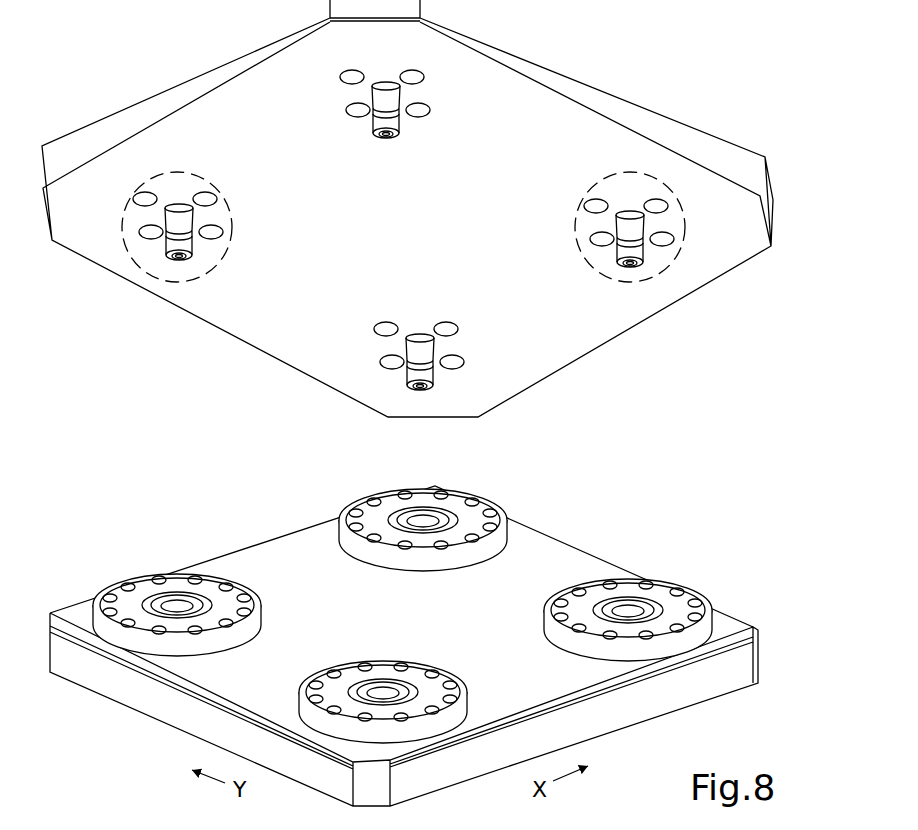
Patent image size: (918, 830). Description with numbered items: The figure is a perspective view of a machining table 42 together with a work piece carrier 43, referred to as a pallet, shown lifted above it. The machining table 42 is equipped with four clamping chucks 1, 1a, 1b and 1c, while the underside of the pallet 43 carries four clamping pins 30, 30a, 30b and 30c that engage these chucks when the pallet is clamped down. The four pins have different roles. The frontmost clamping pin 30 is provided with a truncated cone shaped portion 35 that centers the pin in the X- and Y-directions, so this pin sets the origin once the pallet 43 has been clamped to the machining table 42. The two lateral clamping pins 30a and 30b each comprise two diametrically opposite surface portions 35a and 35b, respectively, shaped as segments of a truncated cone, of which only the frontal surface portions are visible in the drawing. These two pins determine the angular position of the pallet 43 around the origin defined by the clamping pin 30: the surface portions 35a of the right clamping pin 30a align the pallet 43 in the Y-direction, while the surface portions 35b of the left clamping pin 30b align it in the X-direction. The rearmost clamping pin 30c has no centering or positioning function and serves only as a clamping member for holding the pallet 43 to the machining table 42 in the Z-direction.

The clamping chuck 1 is at (347, 660).
The clamping chuck 1a is at (643, 565).
The clamping chuck 1b is at (147, 559).
The clamping chuck 1c is at (362, 487).
The clamping pin 30 is at (408, 112).
The clamping pin 30a is at (611, 227).
The clamping pin 30b is at (195, 211).
The clamping pin 30c is at (451, 347).
The truncated cone shaped portion 35 is at (392, 95).
The surface portions 35a is at (642, 217).
The surface portions 35b is at (171, 210).
The machining table 42 is at (771, 632).
The work piece carrier 43 is at (779, 172).